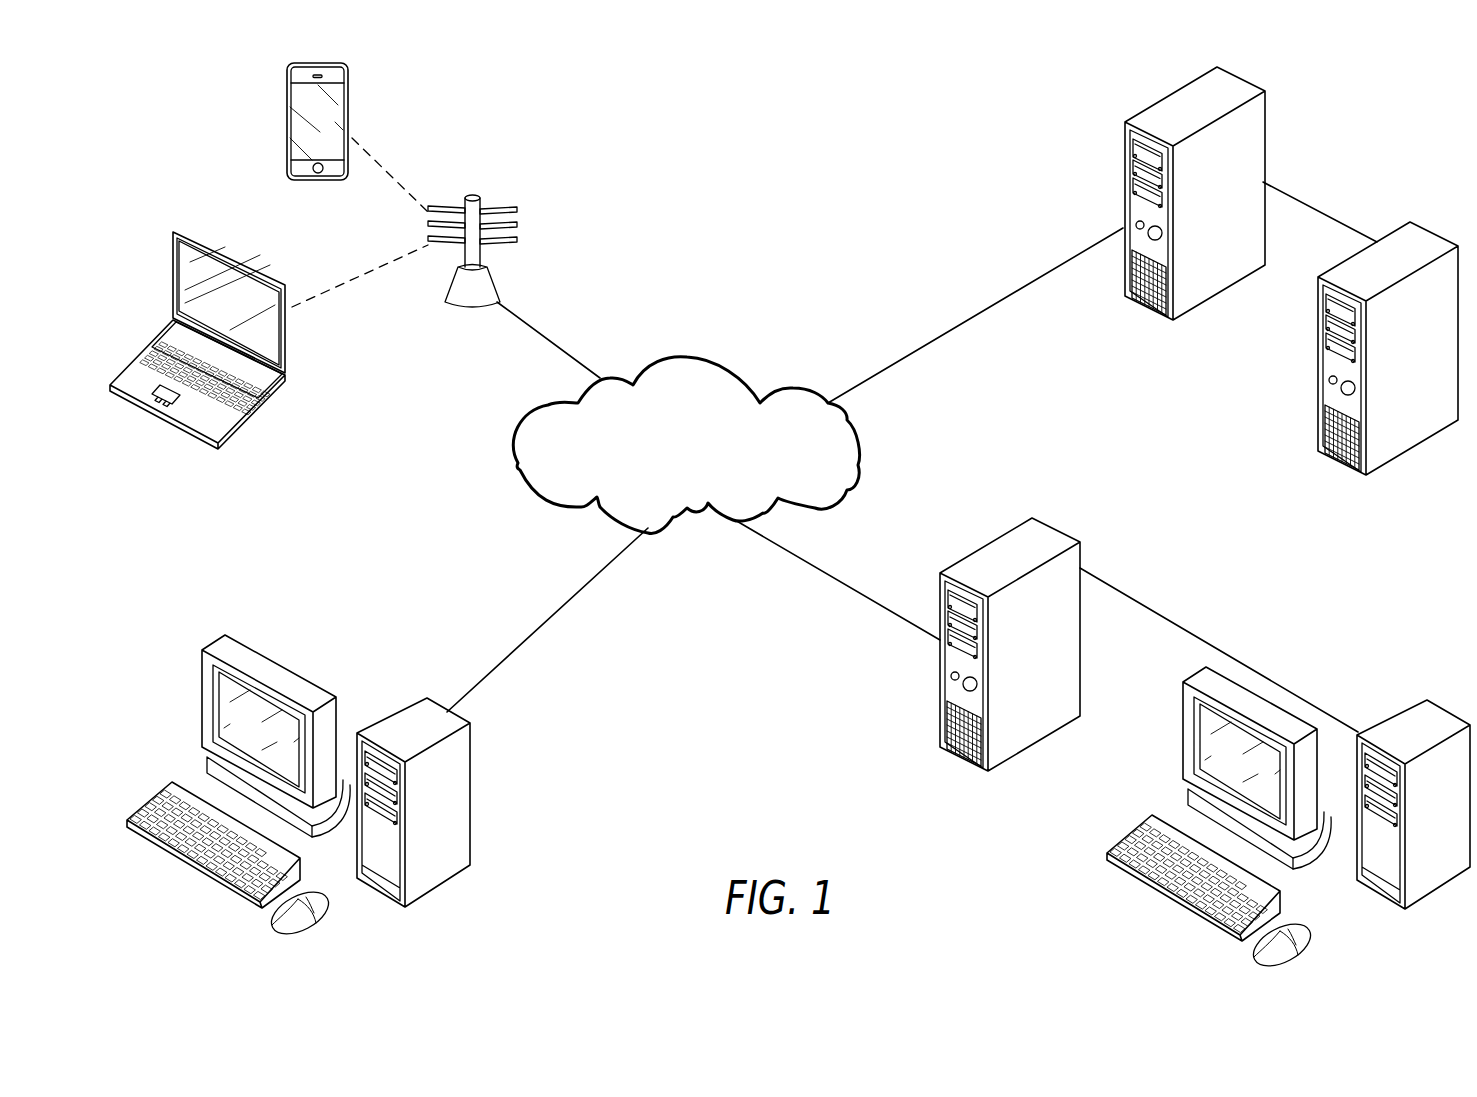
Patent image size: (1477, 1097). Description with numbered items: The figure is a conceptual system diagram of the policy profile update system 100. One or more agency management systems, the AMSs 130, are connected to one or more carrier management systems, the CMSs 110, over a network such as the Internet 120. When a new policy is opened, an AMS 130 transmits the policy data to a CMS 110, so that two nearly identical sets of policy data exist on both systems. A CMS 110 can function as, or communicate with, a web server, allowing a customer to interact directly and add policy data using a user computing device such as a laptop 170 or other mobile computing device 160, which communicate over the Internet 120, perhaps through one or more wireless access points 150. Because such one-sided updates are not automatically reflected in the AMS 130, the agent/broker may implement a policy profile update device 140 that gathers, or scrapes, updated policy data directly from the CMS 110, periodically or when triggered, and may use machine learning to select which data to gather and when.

The policy profile update system 100 is at (632, 806).
The carrier management system (CMS) 110 is at (1157, 102).
The Internet 120 is at (688, 357).
The agency management system (AMS) 130 is at (207, 647).
The policy profile update device 140 is at (1003, 535).
The wireless access point 150 is at (472, 195).
The mobile computing device 160 is at (287, 121).
The laptop 170 is at (172, 278).